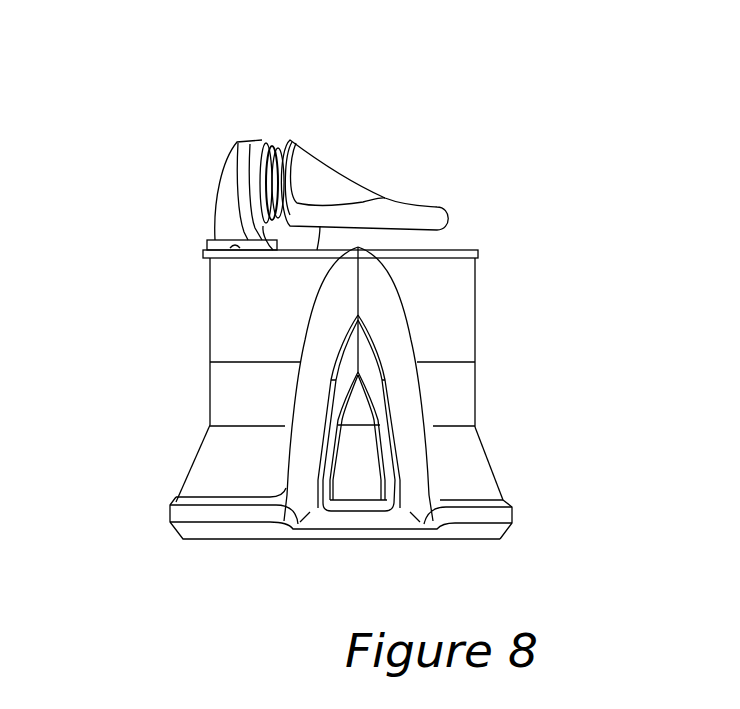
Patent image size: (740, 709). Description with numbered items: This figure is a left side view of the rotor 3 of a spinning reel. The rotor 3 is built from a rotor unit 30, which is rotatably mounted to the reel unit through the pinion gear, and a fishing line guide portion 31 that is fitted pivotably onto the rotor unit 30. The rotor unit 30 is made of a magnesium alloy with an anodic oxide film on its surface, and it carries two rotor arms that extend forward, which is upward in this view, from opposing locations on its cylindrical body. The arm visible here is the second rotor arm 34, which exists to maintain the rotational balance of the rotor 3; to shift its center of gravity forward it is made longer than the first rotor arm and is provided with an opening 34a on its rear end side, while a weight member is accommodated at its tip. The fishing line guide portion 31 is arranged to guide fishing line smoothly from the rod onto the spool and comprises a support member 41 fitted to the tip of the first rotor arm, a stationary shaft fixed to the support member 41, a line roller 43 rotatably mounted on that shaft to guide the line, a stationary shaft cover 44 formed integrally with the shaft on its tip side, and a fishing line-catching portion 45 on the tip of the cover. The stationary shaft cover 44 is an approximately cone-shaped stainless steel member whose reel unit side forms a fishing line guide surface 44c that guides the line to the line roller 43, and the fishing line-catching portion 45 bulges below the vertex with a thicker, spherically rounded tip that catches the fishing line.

The rotor 3 is at (485, 395).
The rotor unit 30 is at (342, 394).
The fishing line guide portion 31 is at (186, 163).
The second rotor arm 34 is at (406, 368).
The opening 34a is at (335, 450).
The support member 41 is at (218, 177).
The line roller 43 is at (260, 141).
The stationary shaft cover 44 is at (316, 194).
The fishing line guide surface 44c is at (315, 252).
The fishing line-catching portion 45 is at (434, 216).